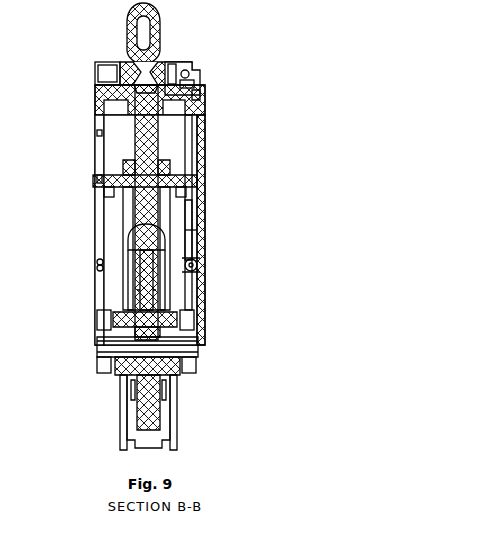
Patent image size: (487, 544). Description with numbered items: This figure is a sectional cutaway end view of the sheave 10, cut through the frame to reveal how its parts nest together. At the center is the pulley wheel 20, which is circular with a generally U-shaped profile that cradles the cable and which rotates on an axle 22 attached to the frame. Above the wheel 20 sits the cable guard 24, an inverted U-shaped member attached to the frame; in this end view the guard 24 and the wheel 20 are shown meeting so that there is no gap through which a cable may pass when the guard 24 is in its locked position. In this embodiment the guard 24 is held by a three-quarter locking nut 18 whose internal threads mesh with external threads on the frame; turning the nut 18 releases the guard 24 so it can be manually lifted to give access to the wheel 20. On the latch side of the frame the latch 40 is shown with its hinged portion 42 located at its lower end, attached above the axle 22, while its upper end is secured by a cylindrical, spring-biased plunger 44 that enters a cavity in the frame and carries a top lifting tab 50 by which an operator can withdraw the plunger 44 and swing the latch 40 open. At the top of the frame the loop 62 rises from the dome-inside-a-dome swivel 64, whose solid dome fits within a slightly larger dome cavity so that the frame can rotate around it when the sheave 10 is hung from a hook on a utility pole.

The sheave 10 is at (50, 380).
The locking nut 18 is at (197, 177).
The pulley wheel 20 is at (177, 428).
The axle 22 is at (195, 345).
The cable guard 24 is at (130, 236).
The latch 40 is at (200, 225).
The hinged portion 42 is at (197, 268).
The plunger 44 is at (205, 108).
The lifting tab 50 is at (200, 70).
The loop 62 is at (160, 28).
The dome-inside-a-dome swivel 64 is at (200, 93).